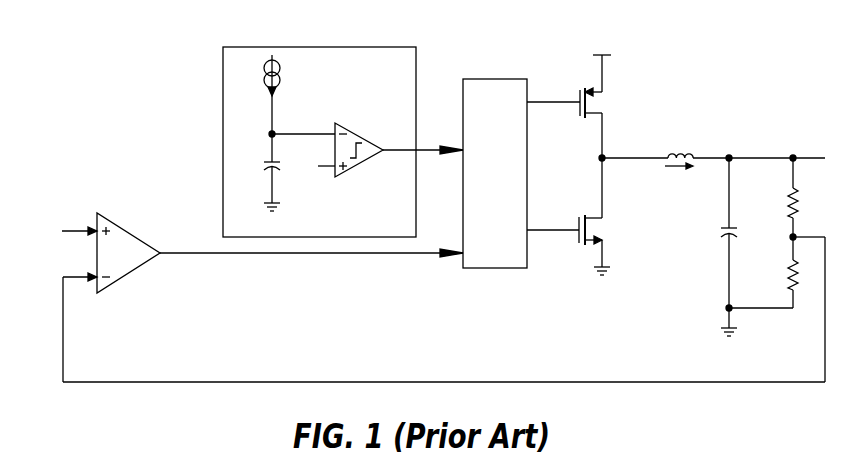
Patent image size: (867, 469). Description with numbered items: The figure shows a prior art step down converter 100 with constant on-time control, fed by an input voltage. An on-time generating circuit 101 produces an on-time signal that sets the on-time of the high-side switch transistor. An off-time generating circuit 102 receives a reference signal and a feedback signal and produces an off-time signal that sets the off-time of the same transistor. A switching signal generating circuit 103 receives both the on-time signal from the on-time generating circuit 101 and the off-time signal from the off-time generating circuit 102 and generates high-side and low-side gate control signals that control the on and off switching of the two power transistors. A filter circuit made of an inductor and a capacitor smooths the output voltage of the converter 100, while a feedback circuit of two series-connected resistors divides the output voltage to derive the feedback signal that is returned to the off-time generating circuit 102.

The step down converter 100 is at (642, 88).
The on-time generating circuit 101 is at (333, 65).
The off-time generating circuit 102 is at (117, 270).
The switching signal generating circuit 103 is at (483, 262).